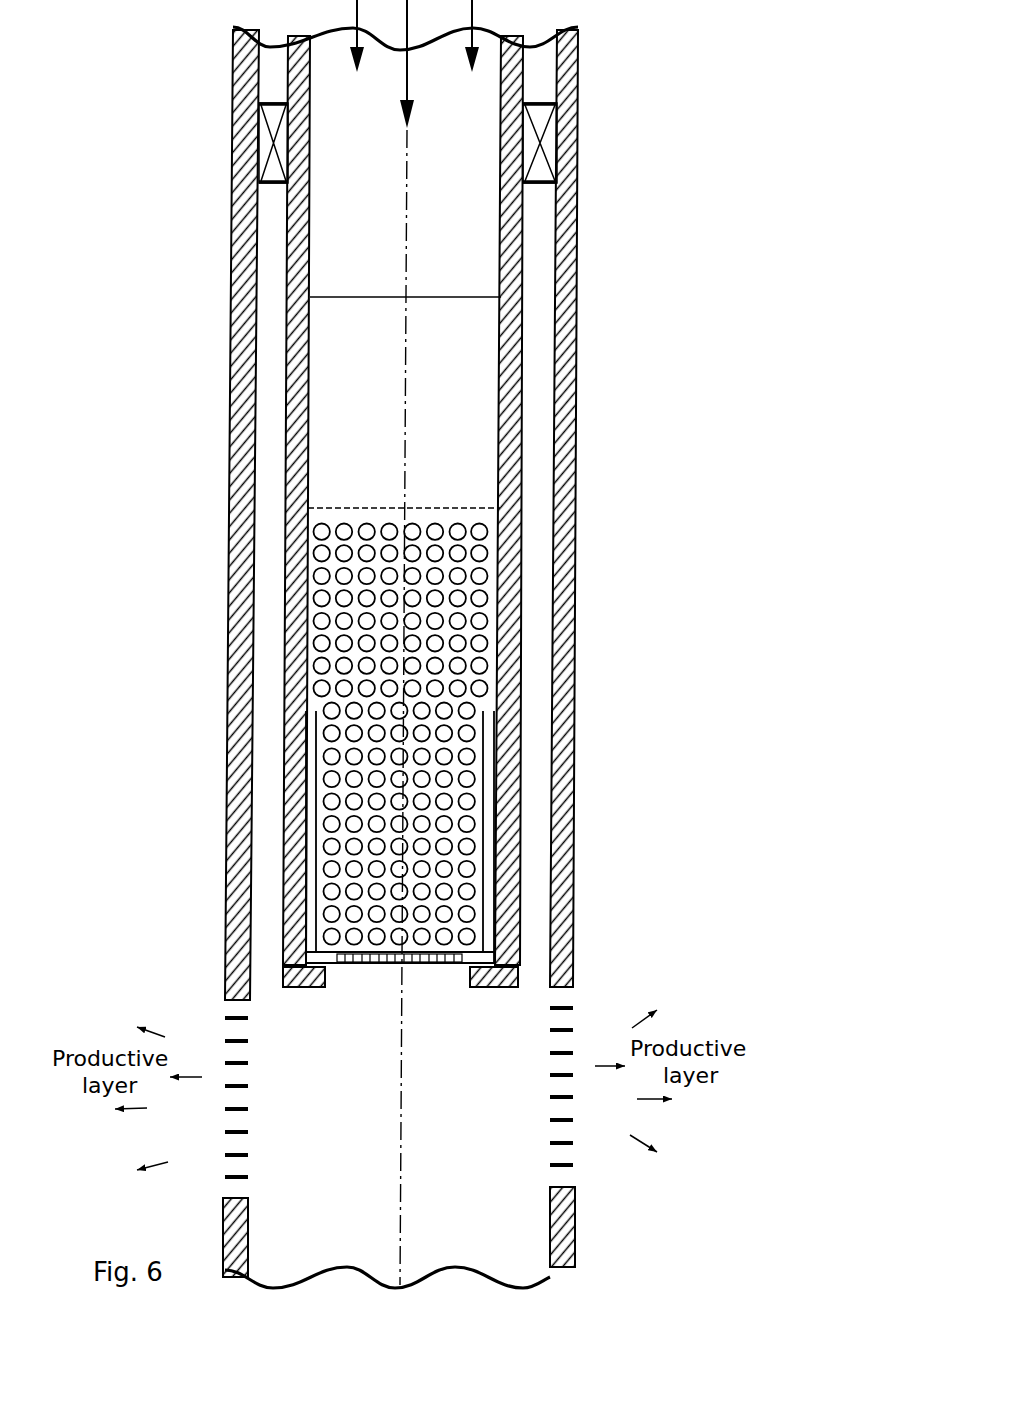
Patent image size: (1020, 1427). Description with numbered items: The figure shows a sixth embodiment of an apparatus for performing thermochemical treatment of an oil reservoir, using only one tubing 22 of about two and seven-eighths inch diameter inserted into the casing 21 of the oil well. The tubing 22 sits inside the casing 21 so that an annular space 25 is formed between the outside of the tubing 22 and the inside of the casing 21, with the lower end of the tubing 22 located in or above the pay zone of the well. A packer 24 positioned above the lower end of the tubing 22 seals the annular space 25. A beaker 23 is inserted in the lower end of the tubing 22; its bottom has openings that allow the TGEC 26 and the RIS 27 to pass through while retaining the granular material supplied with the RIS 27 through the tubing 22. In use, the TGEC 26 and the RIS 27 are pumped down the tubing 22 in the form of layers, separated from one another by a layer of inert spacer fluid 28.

The casing 21 is at (237, 442).
The tubing 22 is at (293, 702).
The beaker 23 is at (315, 917).
The packer 24 is at (280, 148).
The annular space 25 is at (537, 653).
The TGEC 26 is at (405, 178).
The RIS 27 is at (395, 765).
The spacer fluid 28 is at (404, 404).